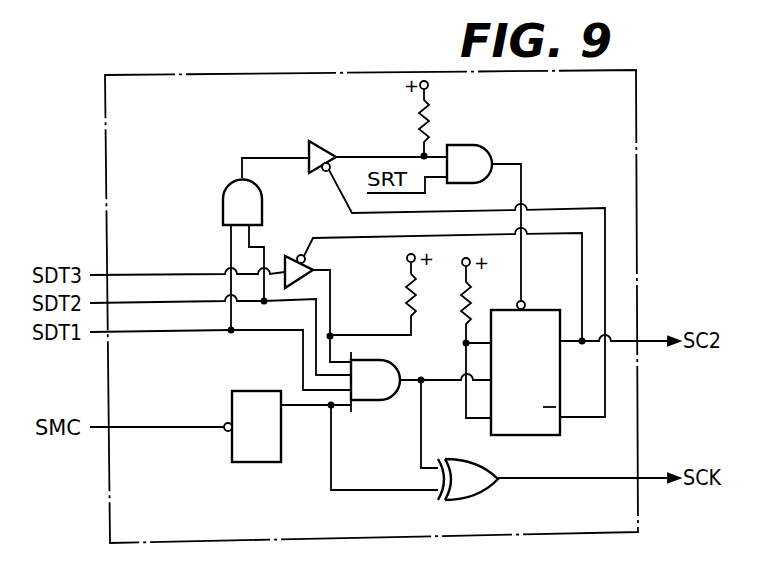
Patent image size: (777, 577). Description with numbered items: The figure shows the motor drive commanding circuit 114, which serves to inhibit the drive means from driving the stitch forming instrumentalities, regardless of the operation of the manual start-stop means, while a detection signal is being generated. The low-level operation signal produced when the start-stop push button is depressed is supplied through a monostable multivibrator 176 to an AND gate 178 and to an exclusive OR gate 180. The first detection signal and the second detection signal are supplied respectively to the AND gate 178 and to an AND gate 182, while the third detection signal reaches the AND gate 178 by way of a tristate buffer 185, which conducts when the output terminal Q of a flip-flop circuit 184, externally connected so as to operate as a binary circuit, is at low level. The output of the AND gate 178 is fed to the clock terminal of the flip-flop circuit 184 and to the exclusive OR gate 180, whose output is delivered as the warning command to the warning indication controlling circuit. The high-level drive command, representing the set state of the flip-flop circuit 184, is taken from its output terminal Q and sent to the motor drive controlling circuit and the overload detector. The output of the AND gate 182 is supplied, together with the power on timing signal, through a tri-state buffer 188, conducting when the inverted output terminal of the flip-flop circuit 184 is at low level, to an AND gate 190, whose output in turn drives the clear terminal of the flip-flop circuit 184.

The motor drive commanding circuit 114 is at (104, 165).
The monostable multivibrator 176 is at (259, 462).
The AND gate 178 is at (381, 396).
The exclusive OR gate 180 is at (475, 492).
The AND gate 182 is at (262, 207).
The flip-flop circuit 184 is at (533, 435).
The tristate buffer 185 is at (305, 262).
The tri-state buffer 188 is at (324, 143).
The AND gate 190 is at (477, 143).